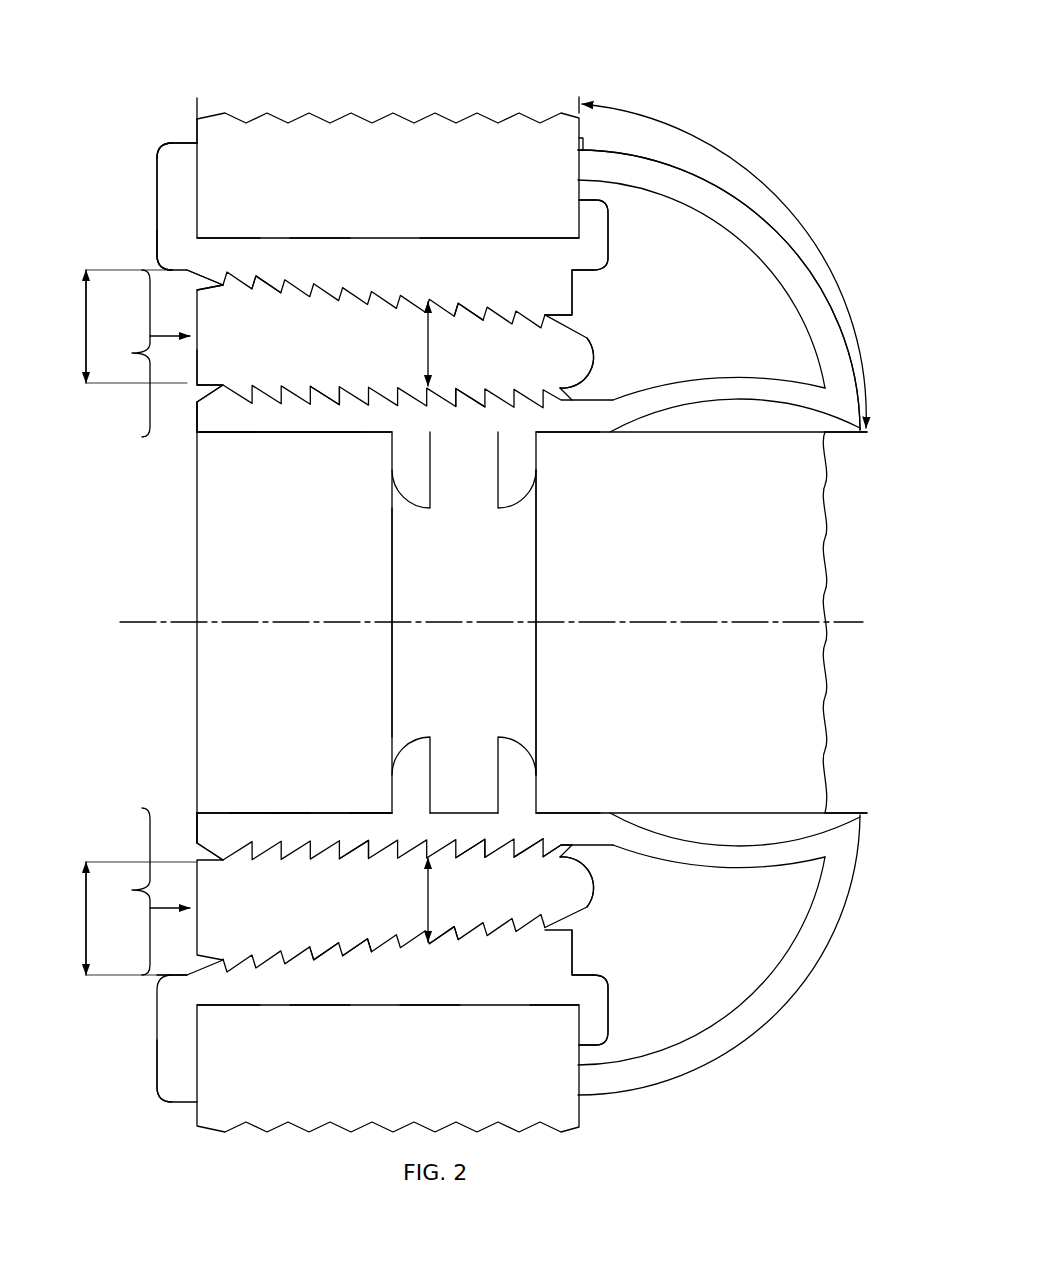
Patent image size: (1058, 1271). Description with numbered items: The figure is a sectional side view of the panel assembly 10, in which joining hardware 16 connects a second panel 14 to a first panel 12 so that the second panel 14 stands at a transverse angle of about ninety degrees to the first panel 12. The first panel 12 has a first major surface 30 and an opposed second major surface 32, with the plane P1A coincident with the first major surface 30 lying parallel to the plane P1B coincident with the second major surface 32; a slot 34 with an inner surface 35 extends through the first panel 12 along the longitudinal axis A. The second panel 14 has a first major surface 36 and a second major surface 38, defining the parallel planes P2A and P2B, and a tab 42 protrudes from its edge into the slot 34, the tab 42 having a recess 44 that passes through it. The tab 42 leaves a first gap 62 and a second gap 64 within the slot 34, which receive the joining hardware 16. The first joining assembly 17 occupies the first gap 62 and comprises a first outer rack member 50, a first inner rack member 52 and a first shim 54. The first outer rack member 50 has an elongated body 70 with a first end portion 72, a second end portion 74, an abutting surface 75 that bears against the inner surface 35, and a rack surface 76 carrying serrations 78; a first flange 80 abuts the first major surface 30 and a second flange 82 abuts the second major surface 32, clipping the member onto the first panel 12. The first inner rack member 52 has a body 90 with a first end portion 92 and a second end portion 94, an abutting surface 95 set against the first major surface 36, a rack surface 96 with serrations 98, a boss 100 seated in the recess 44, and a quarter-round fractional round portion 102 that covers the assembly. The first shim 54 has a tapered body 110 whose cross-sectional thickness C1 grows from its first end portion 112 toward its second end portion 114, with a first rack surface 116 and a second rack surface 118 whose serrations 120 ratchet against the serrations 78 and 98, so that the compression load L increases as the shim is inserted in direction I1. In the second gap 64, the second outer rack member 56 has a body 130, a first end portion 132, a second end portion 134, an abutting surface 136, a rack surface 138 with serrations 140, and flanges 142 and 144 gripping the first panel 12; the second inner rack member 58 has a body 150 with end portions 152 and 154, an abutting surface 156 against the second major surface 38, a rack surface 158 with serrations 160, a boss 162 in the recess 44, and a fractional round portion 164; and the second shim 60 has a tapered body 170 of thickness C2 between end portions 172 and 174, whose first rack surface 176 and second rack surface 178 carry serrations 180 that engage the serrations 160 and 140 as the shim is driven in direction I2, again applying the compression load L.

The panel assembly 10 is at (795, 150).
The first panel 12 is at (347, 128).
The second panel 14 is at (828, 576).
The joining hardware 16 is at (124, 172).
The first joining assembly 17 is at (108, 263).
The first major surface 30 is at (582, 139).
The second major surface 32 is at (196, 140).
The slot 34 is at (492, 243).
The inner surface 35 is at (550, 243).
The first major surface 36 is at (752, 430).
The second major surface 38 is at (720, 814).
The tab 42 is at (210, 722).
The recess 44 is at (535, 541).
The first outer rack member 50 is at (325, 253).
The first inner rack member 52 is at (300, 420).
The first shim 54 is at (335, 420).
The second outer rack member 56 is at (318, 997).
The second inner rack member 58 is at (281, 823).
The second shim 60 is at (371, 827).
The first gap 62 is at (136, 353).
The second gap 64 is at (141, 891).
The body 70 is at (383, 250).
The first end portion 72 is at (608, 276).
The second end portion 74 is at (186, 282).
The abutting surface 75 is at (463, 240).
The rack surface 76 is at (451, 344).
The serrations 78 is at (298, 295).
The first flange 80 is at (608, 235).
The second flange 82 is at (157, 242).
The body 90 is at (364, 420).
The first end portion 92 is at (559, 437).
The second end portion 94 is at (196, 437).
The abutting surface 95 is at (268, 428).
The rack surface 96 is at (322, 390).
The serrations 98 is at (293, 386).
The boss 100 is at (498, 493).
The fractional round portion 102 is at (670, 160).
The body 110 is at (199, 367).
The first end portion 112 is at (603, 358).
The second end portion 114 is at (182, 381).
The first rack surface 116 is at (240, 275).
The second rack surface 118 is at (228, 422).
The serrations 120 is at (286, 282).
The body 130 is at (385, 990).
The first end portion 132 is at (615, 982).
The second end portion 134 is at (157, 999).
The abutting surface 136 is at (437, 1003).
The rack surface 138 is at (458, 923).
The serrations 140 is at (272, 957).
The first flange 142 is at (610, 1007).
The second flange 144 is at (155, 1067).
The body 150 is at (331, 823).
The first end portion 152 is at (544, 806).
The second end portion 154 is at (182, 809).
The abutting surface 156 is at (265, 812).
The rack surface 158 is at (298, 857).
The serrations 160 is at (460, 855).
The boss 162 is at (496, 740).
The fractional round portion 164 is at (725, 1053).
The body 170 is at (355, 943).
The first end portion 172 is at (602, 884).
The second end portion 174 is at (180, 867).
The first rack surface 176 is at (437, 843).
The second rack surface 178 is at (267, 988).
The serrations 180 is at (357, 855).
The longitudinal axis A is at (133, 625).
The compression load L is at (426, 364).
The cross-sectional thickness C1 is at (92, 339).
The cross-sectional thickness C2 is at (90, 930).
The insertion direction I1 is at (168, 335).
The insertion direction I2 is at (170, 907).
The plane P1A is at (578, 104).
The plane P1B is at (196, 106).
The plane P2A is at (854, 436).
The plane P2B is at (854, 811).